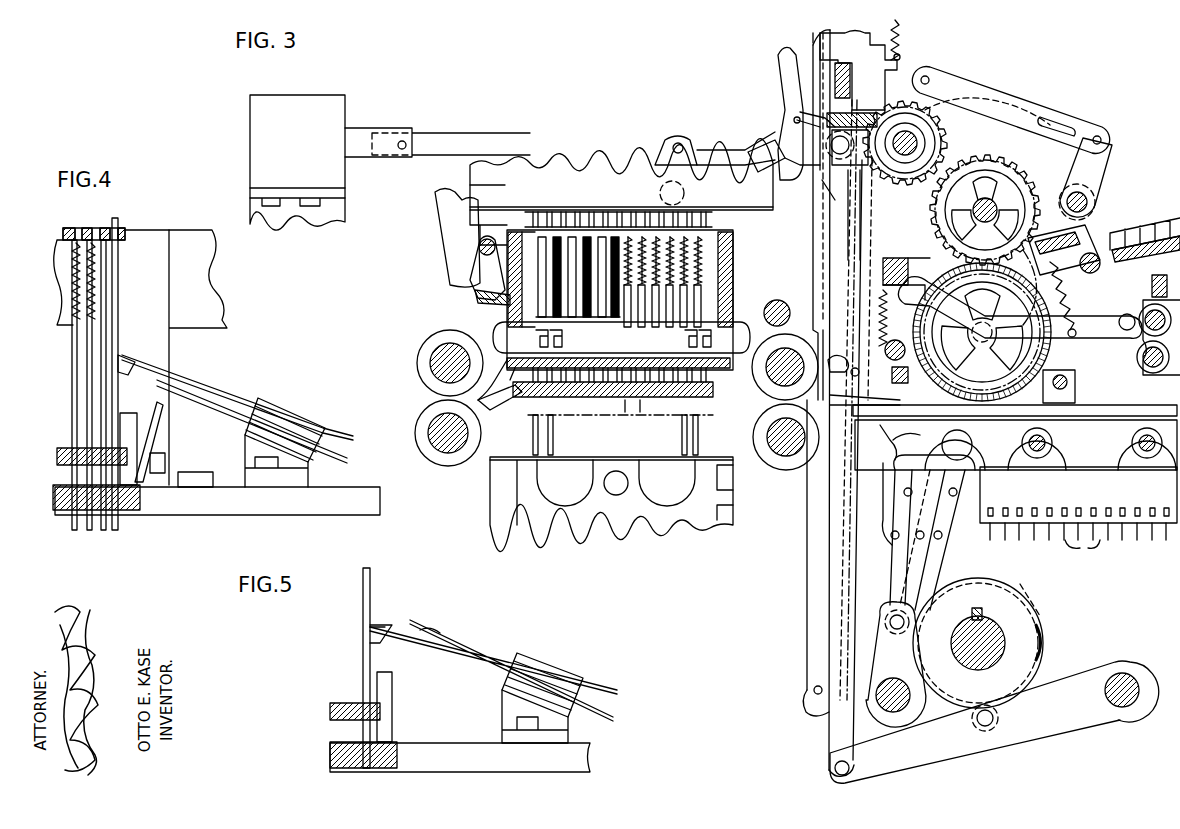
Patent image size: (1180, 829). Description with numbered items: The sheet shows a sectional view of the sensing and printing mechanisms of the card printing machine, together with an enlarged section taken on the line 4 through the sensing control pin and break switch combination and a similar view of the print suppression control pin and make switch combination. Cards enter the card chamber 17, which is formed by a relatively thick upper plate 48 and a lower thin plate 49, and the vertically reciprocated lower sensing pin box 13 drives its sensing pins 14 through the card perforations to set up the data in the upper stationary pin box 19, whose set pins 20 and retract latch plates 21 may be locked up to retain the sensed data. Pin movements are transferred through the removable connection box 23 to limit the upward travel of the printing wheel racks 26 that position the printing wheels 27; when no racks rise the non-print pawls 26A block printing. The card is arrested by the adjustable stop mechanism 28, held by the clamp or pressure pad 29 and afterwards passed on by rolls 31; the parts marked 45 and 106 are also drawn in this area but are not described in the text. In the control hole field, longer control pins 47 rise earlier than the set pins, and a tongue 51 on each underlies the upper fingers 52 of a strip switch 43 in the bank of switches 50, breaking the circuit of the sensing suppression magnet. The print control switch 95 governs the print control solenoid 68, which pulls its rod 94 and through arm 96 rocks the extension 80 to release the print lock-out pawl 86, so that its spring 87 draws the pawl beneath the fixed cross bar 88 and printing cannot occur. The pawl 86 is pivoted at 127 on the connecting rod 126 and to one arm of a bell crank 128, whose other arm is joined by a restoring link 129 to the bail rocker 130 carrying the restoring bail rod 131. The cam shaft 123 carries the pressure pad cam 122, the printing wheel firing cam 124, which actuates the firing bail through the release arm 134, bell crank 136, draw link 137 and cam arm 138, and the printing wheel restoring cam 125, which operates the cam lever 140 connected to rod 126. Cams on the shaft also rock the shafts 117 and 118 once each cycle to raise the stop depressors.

In FIG. 3, the section line 4 is at (567, 188).
In FIG. 3, the lower sensing pin box 13 is at (563, 502).
In FIG. 3, the sensing pins 14 is at (683, 430).
In FIG. 4, the sensing pins 14 is at (95, 525).
In FIG. 3, the card chamber 17 is at (655, 402).
In FIG. 3, the upper stationary pin box 19 is at (507, 312).
In FIG. 3, the set pins 20 is at (684, 313).
In FIG. 4, the set pins 20 is at (65, 465).
In FIG. 3, the retract latch plates 21 is at (622, 349).
In FIG. 3, the removable connection box 23 is at (553, 165).
In FIG. 3, the printing wheel racks 26 is at (880, 88).
In FIG. 3, the non-print pawls 26A is at (948, 345).
In FIG. 3, the printing wheels 27 is at (948, 240).
In FIG. 3, the adjustable stop mechanism 28 is at (1132, 546).
In FIG. 3, the clamp or pressure pad 29 is at (900, 421).
In FIG. 3, the rolls 31 is at (752, 412).
In FIG. 4, the strip switch 43 is at (234, 407).
In FIG. 3, the roller 45 is at (708, 372).
In FIG. 3, the control pins 47 is at (610, 400).
In FIG. 4, the control pins 47 is at (143, 505).
In FIG. 3, the upper plate 48 is at (492, 412).
In FIG. 4, the upper plate 48 is at (210, 508).
In FIG. 3, the lower thin plate 49 is at (500, 372).
In FIG. 4, the bank of switches 50 is at (305, 415).
In FIG. 5, the bank of switches 50 is at (560, 665).
In FIG. 3, the tongue 51 is at (598, 320).
In FIG. 4, the tongue 51 is at (128, 375).
In FIG. 3, the upper fingers 52 is at (500, 278).
In FIG. 4, the upper fingers 52 is at (212, 388).
In FIG. 3, the print control solenoid 68 is at (292, 99).
In FIG. 3, the extension 80 is at (768, 158).
In FIG. 3, the print lock-out pawl 86 is at (786, 78).
In FIG. 3, the spring 87 is at (800, 112).
In FIG. 3, the fixed cross bar 88 is at (860, 65).
In FIG. 3, the rod 94 is at (453, 137).
In FIG. 5, the print control switch 95 is at (468, 650).
In FIG. 3, the arm 96 is at (663, 167).
In FIG. 3, the fingers 106 is at (1093, 543).
In FIG. 3, the shaft 117 is at (962, 445).
In FIG. 3, the shaft 118 is at (955, 418).
In FIG. 3, the pressure pad cam 122 is at (1030, 606).
In FIG. 3, the cam shaft 123 is at (990, 656).
In FIG. 3, the printing wheel firing cam 124 is at (1044, 648).
In FIG. 3, the printing wheel restoring cam 125 is at (1008, 585).
In FIG. 3, the connecting rod 126 is at (829, 740).
In FIG. 3, the pivot 127 is at (834, 770).
In FIG. 3, the bell crank 128 is at (940, 96).
In FIG. 3, the restoring link 129 is at (1050, 112).
In FIG. 3, the bail rocker 130 is at (1098, 212).
In FIG. 3, the restoring bail rod 131 is at (1096, 256).
In FIG. 3, the release arm 134 is at (996, 148).
In FIG. 3, the bell crank 136 is at (987, 95).
In FIG. 3, the draw link 137 is at (806, 645).
In FIG. 3, the cam arm 138 is at (804, 700).
In FIG. 3, the cam lever 140 is at (1086, 722).